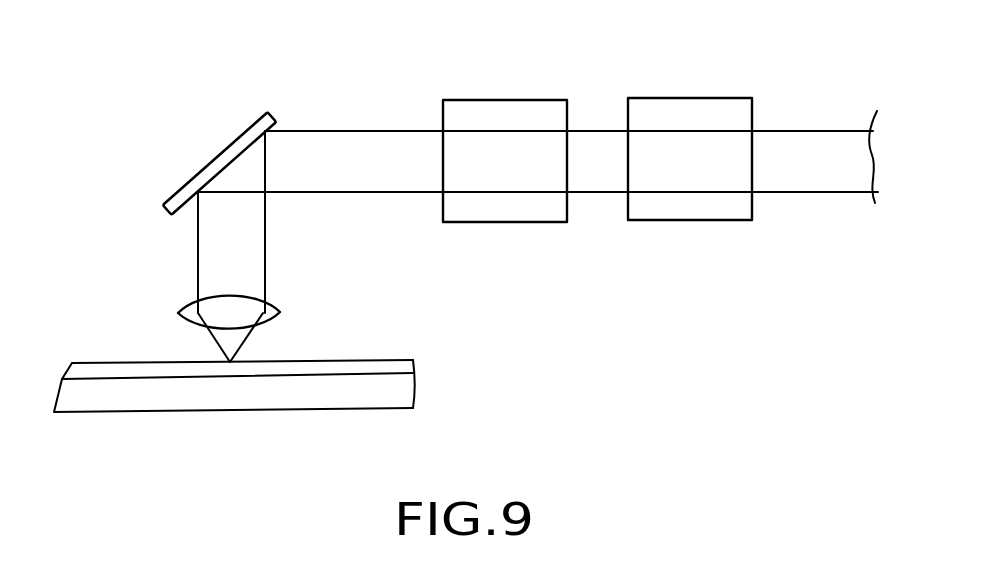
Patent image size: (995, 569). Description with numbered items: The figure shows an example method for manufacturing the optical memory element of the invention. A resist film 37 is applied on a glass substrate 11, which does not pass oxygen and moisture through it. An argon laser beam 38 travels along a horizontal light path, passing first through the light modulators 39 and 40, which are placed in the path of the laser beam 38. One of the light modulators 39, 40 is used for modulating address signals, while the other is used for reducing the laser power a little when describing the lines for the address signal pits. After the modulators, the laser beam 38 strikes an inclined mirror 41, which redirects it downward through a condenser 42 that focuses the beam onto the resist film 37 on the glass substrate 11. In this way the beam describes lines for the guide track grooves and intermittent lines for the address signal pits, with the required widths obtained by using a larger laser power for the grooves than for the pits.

The glass substrate 11 is at (412, 392).
The resist film 37 is at (417, 365).
The laser beam 38 is at (818, 137).
The light modulator 39 is at (677, 107).
The light modulator 40 is at (508, 105).
The mirror 41 is at (271, 113).
The condenser 42 is at (268, 296).